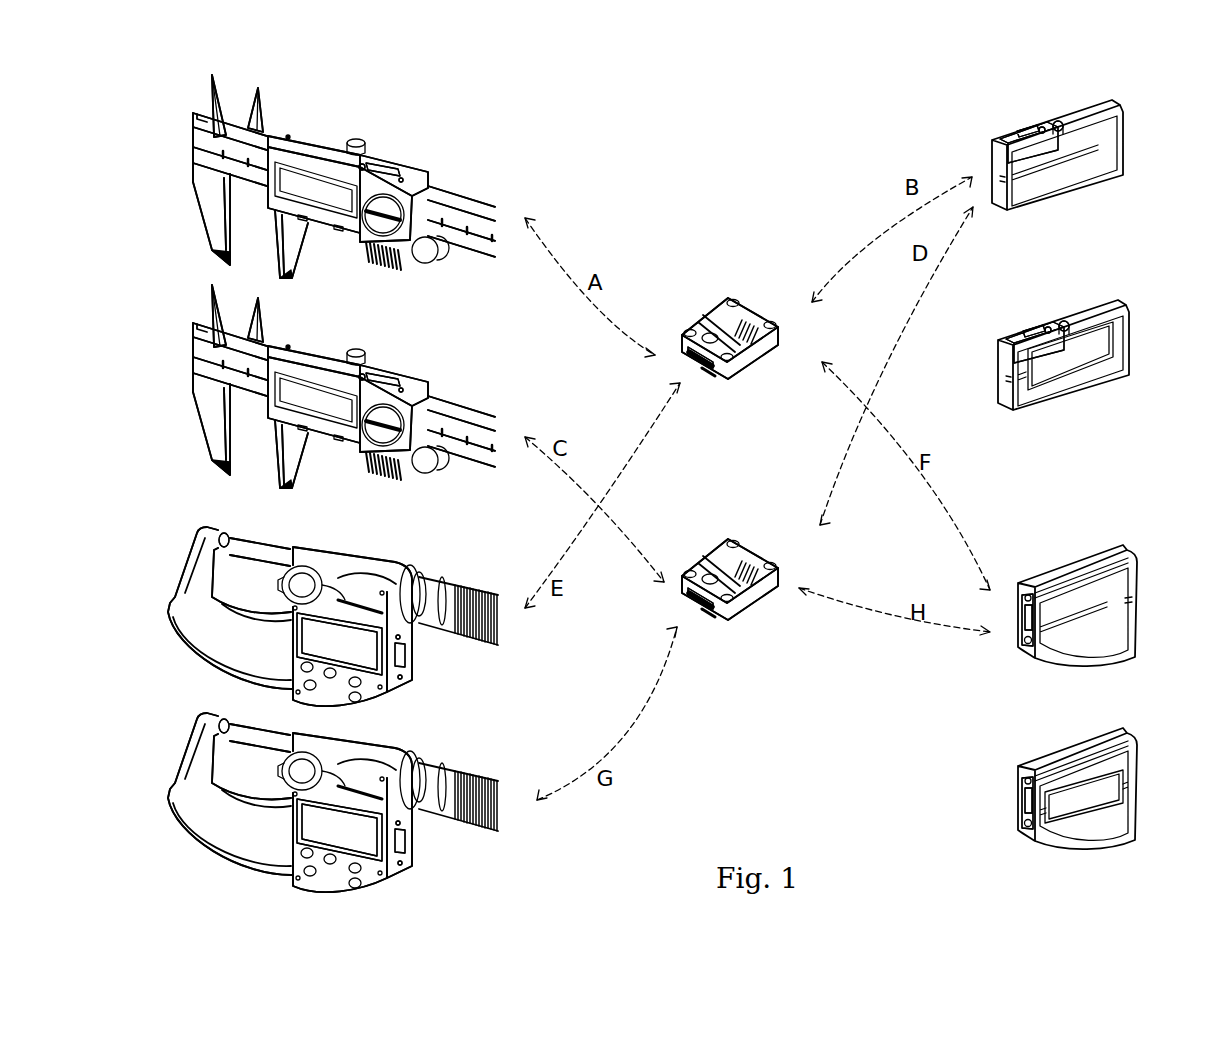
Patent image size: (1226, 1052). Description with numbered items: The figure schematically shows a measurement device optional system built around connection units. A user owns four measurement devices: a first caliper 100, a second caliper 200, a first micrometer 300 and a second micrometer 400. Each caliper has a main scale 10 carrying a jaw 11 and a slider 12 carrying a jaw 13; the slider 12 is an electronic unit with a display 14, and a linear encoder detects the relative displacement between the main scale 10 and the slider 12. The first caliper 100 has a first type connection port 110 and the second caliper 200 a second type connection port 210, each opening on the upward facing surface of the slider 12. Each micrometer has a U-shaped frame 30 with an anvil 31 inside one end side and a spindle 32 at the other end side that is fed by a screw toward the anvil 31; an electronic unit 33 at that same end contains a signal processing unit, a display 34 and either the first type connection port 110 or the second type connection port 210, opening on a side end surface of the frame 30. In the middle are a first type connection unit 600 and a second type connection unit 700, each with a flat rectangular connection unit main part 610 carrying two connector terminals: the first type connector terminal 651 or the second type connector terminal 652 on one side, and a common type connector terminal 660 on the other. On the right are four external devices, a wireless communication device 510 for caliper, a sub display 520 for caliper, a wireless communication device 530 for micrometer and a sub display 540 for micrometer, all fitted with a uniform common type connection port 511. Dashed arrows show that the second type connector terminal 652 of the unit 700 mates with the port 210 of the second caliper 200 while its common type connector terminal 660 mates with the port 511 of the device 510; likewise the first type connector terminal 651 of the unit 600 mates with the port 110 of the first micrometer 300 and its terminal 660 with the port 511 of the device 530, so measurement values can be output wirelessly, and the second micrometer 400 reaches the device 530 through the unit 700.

The main scale 10 is at (478, 212).
The jaw of the main scale 11 is at (212, 228).
The slider 12 is at (313, 147).
The jaw of the slider 13 is at (260, 103).
The display 14 is at (268, 207).
The first caliper 100 is at (464, 128).
The first type connection port 110 is at (385, 166).
The second caliper 200 is at (464, 338).
The second type connection port 210 is at (385, 376).
The first micrometer 300 is at (457, 557).
The second micrometer 400 is at (457, 743).
The U-shaped frame 30 is at (195, 635).
The anvil 31 is at (228, 532).
The spindle 32 is at (267, 552).
The electronic unit 33 is at (362, 593).
The display 34 is at (322, 627).
The first type connection unit 600 is at (757, 286).
The second type connection unit 700 is at (757, 527).
The connection unit main part 610 is at (760, 317).
The common type connector terminal 660 is at (769, 367).
The first type connector terminal 651 is at (705, 376).
The second type connector terminal 652 is at (705, 617).
The wireless communication device for caliper 510 is at (1127, 89).
The sub display for caliper 520 is at (1134, 286).
The wireless communication device for micrometer 530 is at (1153, 542).
The sub display for micrometer 540 is at (1153, 725).
The common type connection port 511 is at (1018, 130).